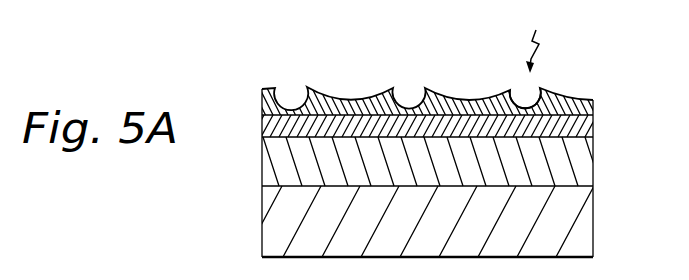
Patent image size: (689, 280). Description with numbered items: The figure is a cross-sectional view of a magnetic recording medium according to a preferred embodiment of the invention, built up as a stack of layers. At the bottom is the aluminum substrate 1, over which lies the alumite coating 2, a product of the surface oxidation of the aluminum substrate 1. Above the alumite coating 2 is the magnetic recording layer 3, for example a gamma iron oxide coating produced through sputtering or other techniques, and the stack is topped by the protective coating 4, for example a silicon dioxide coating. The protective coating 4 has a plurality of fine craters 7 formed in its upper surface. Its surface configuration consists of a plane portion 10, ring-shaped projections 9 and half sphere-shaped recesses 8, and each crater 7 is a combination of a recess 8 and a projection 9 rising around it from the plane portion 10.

The aluminum substrate 1 is at (585, 222).
The alumite coating 2 is at (585, 168).
The magnetic recording layer 3 is at (586, 127).
The protective coating 4 is at (584, 97).
The crater 7 is at (533, 38).
The half sphere-shaped recess 8 is at (539, 89).
The ring-shaped projection 9 is at (511, 89).
The plane portion 10 is at (347, 97).